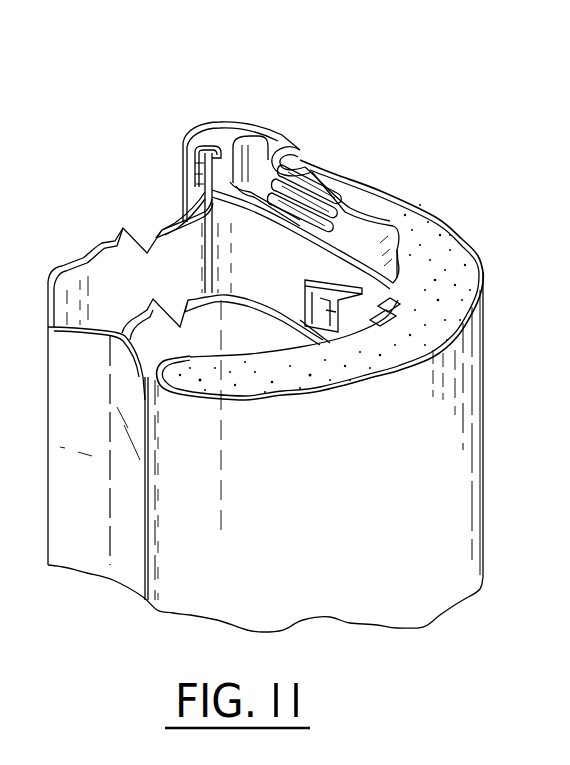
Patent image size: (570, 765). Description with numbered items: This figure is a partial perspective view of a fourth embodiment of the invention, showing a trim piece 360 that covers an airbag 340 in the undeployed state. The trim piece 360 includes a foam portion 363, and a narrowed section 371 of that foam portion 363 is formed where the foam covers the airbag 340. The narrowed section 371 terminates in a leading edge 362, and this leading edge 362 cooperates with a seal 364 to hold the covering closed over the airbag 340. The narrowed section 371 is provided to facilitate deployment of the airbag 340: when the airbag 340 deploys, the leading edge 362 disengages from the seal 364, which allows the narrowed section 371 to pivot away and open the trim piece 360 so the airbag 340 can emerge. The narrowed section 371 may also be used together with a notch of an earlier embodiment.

The airbag 340 is at (330, 192).
The trim piece 360 is at (477, 249).
The leading edge 362 is at (302, 154).
The foam portion 363 is at (427, 223).
The seal 364 is at (237, 128).
The narrowed section 371 is at (396, 194).